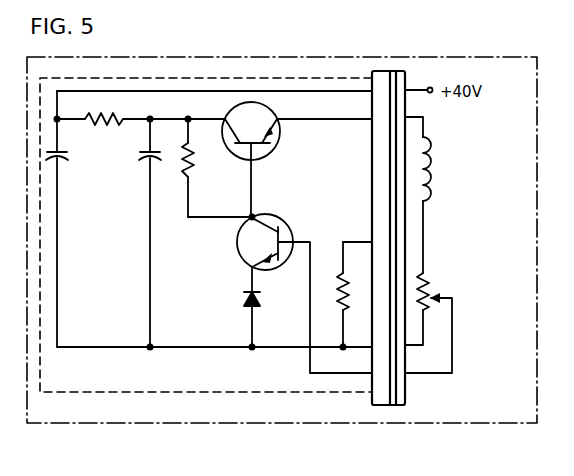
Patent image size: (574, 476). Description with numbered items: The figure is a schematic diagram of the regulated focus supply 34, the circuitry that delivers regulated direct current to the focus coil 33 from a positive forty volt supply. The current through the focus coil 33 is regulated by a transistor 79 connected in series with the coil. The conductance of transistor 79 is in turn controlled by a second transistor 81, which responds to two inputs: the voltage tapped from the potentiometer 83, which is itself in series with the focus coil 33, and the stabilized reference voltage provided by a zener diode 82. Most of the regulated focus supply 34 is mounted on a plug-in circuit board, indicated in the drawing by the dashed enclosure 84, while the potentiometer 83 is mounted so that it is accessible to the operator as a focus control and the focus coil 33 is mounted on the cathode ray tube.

The regulated focus supply 34 is at (541, 54).
The circuit board (dashed enclosure) 84 is at (206, 250).
The transistor 79 is at (283, 143).
The transistor 81 is at (308, 210).
The zener diode 82 is at (235, 307).
The focus coil 33 is at (431, 141).
The potentiometer 83 is at (452, 297).